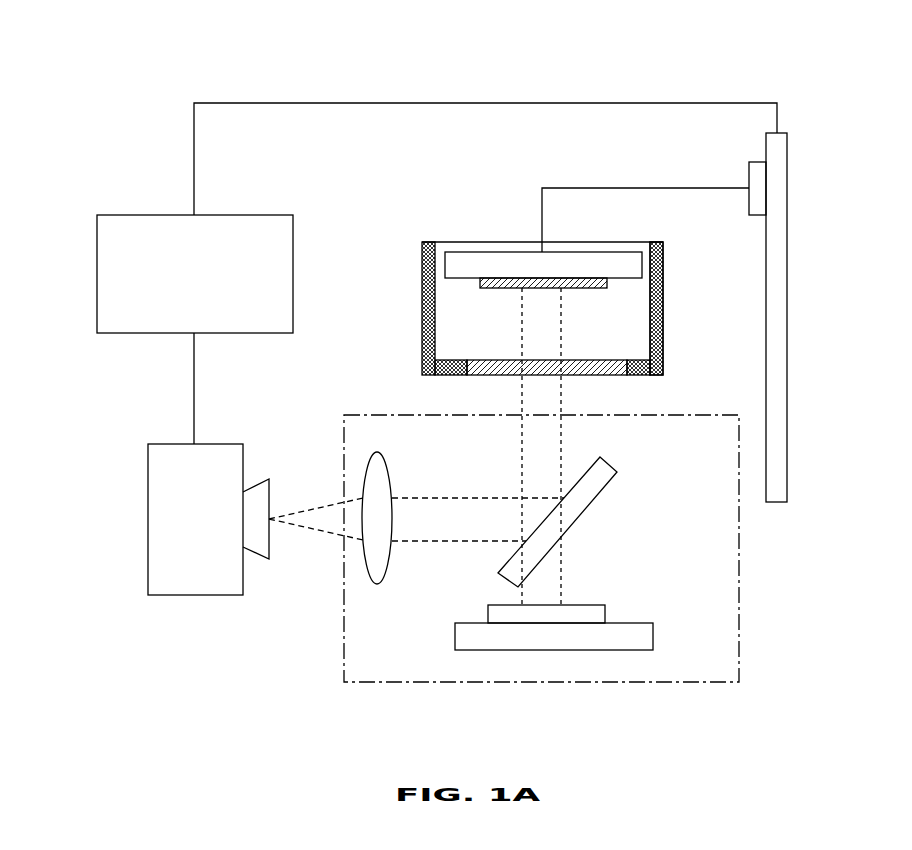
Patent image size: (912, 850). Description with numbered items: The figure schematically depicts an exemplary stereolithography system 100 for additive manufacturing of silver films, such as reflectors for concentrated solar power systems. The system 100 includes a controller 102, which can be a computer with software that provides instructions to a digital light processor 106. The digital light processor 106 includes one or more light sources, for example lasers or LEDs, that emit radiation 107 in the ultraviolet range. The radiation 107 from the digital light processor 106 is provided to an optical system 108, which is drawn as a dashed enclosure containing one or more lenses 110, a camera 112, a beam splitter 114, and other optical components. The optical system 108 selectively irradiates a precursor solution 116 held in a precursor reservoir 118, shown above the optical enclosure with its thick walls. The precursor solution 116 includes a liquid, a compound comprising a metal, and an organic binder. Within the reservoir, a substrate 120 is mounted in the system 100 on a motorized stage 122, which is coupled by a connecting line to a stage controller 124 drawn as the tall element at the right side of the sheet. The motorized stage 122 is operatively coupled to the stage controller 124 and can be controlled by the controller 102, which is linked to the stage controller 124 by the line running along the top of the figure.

The stereolithography system 100 is at (111, 41).
The controller 102 is at (96, 245).
The digital light processor 106 is at (147, 470).
The radiation 107 is at (325, 536).
The optical system 108 is at (741, 574).
The lens 110 is at (391, 556).
The camera 112 is at (656, 628).
The beam splitter 114 is at (613, 485).
The precursor solution 116 is at (452, 314).
The precursor reservoir 118 is at (666, 271).
The substrate 120 is at (606, 290).
The motorized stage 122 is at (465, 250).
The stage controller 124 is at (790, 233).